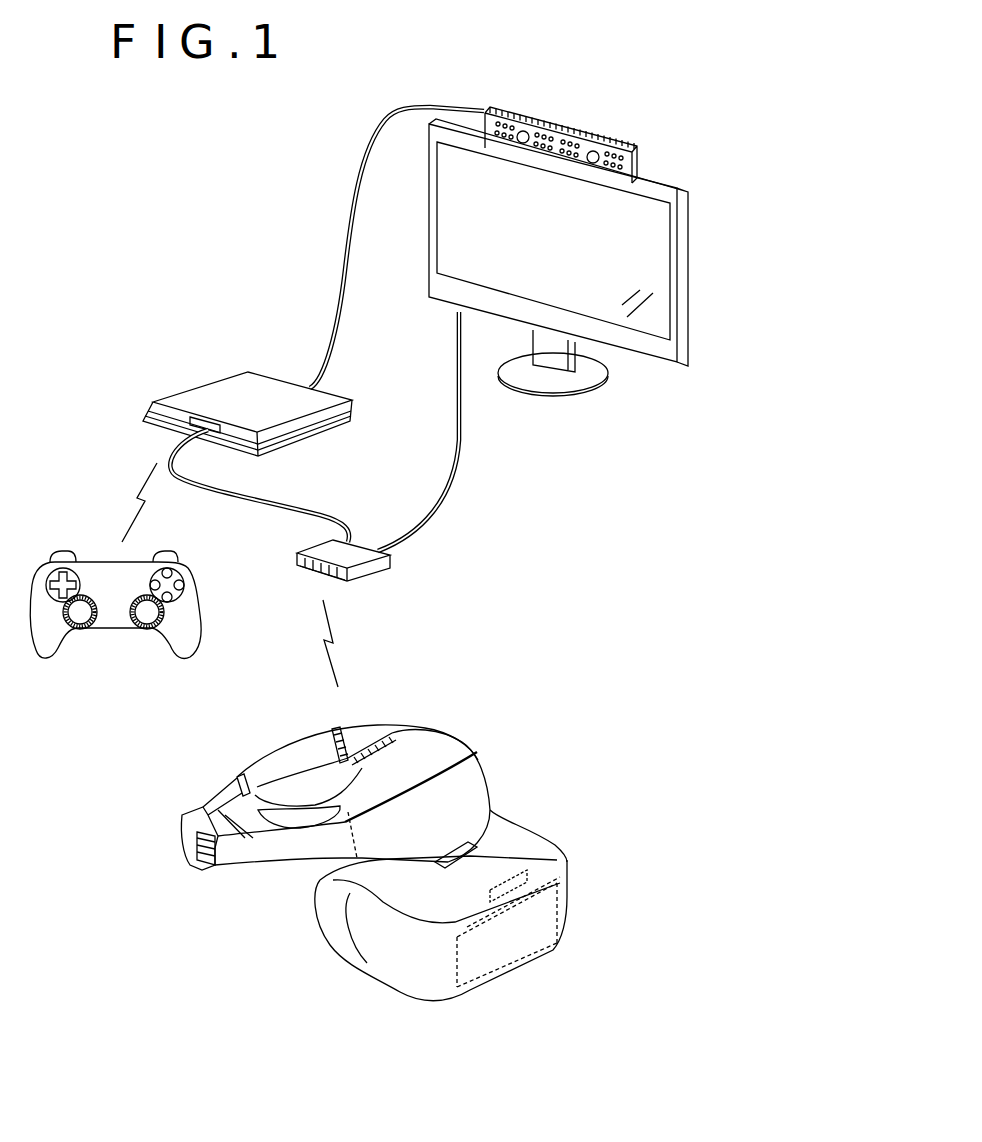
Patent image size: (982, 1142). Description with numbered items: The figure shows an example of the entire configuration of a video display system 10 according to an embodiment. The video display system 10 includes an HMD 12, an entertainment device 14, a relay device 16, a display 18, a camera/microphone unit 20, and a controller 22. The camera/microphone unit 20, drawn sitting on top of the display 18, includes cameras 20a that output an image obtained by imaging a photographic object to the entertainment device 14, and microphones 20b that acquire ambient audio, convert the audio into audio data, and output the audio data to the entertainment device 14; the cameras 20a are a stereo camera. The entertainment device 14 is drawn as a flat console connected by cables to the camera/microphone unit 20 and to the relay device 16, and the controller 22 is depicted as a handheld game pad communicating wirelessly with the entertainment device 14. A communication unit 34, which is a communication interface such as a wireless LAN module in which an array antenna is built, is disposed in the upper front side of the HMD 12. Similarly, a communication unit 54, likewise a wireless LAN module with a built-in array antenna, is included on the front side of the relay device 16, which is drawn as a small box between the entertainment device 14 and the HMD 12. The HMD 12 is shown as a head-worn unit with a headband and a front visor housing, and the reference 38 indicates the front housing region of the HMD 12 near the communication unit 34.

The video display system 10 is at (672, 994).
The HMD 12 is at (405, 886).
The entertainment device 14 is at (198, 388).
The relay device 16 is at (391, 553).
The display 18 is at (690, 272).
The camera/microphone unit 20 is at (586, 138).
The cameras 20a is at (521, 144).
The microphones 20b is at (549, 127).
The controller 22 is at (202, 612).
The communication unit 34 is at (527, 880).
The housing 38 is at (567, 900).
The communication unit 54 is at (343, 582).